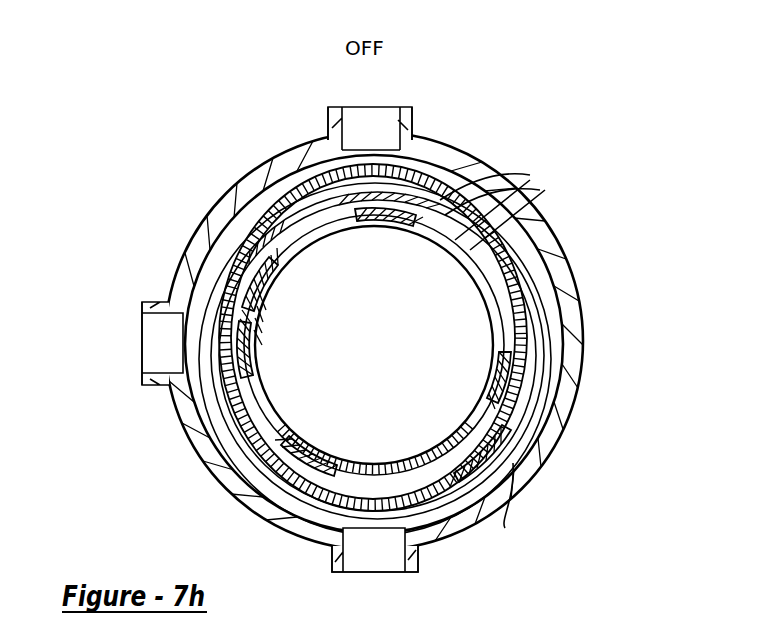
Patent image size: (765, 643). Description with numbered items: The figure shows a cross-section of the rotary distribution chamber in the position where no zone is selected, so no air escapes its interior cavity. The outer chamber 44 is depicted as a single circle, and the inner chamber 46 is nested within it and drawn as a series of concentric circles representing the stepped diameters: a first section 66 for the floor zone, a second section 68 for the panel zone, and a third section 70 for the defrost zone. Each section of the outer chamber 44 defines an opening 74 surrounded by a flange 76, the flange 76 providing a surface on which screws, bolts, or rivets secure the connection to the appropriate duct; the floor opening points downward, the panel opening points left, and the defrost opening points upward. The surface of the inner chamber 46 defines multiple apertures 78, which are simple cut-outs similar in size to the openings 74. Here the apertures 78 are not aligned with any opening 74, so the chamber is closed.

The outer chamber 44 is at (538, 205).
The inner chamber 46 is at (505, 528).
The first section 66 is at (548, 290).
The second section 68 is at (520, 345).
The third section 70 is at (500, 373).
The opening 74 is at (383, 107).
The flange 76 is at (413, 120).
The aperture 78 is at (500, 180).